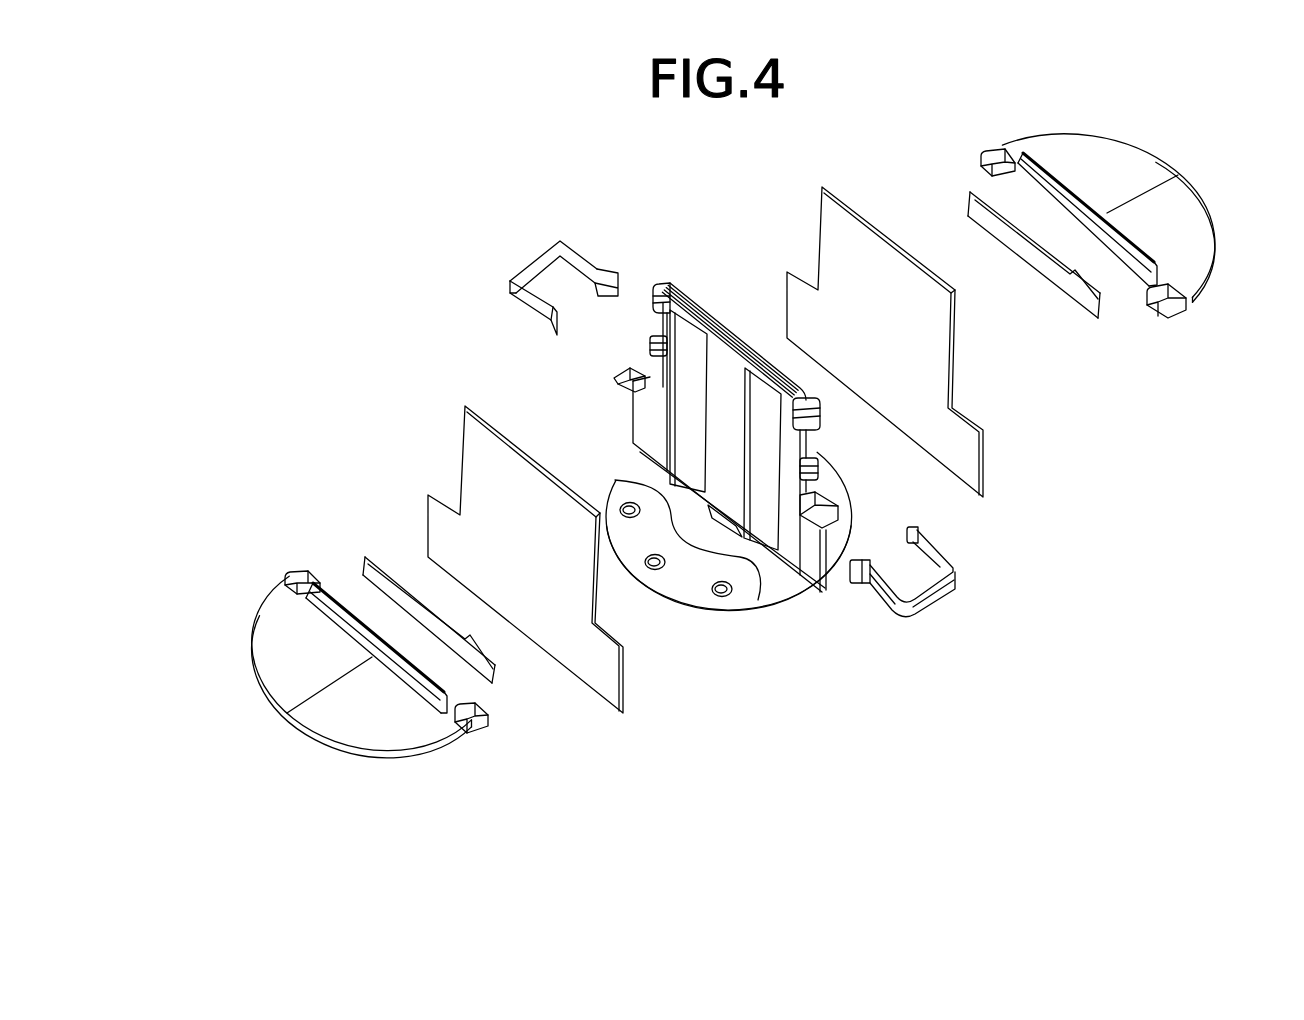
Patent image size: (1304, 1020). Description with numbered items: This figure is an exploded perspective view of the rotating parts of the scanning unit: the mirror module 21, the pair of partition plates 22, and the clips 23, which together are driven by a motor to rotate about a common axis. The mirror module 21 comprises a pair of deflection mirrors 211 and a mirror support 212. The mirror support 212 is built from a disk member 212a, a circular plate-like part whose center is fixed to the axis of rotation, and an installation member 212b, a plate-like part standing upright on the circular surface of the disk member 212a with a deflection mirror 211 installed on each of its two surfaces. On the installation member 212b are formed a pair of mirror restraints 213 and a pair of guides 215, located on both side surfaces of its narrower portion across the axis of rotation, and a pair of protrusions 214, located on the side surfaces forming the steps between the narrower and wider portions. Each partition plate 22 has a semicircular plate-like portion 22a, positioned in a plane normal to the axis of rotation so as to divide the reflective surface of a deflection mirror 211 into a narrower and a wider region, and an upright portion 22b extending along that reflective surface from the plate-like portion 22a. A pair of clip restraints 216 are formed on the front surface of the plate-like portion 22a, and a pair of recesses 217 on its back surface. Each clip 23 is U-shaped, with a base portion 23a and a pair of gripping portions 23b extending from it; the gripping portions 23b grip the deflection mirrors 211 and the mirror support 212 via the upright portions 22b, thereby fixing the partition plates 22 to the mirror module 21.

The mirror module 21 is at (985, 798).
The deflection mirror 211 is at (613, 680).
The mirror support 212 is at (827, 592).
The disk member 212a is at (697, 588).
The installation member 212b is at (647, 421).
The mirror restraint 213 is at (815, 402).
The protrusion 214 is at (633, 381).
The guide 215 is at (653, 351).
The clip restraint 216 is at (300, 572).
The recess 217 is at (983, 175).
The partition plate 22 is at (365, 752).
The plate-like portion 22a is at (280, 670).
The upright portion 22b is at (362, 635).
The clip 23 is at (683, 441).
The base portion 23a is at (542, 256).
The gripping portion 23b is at (585, 262).